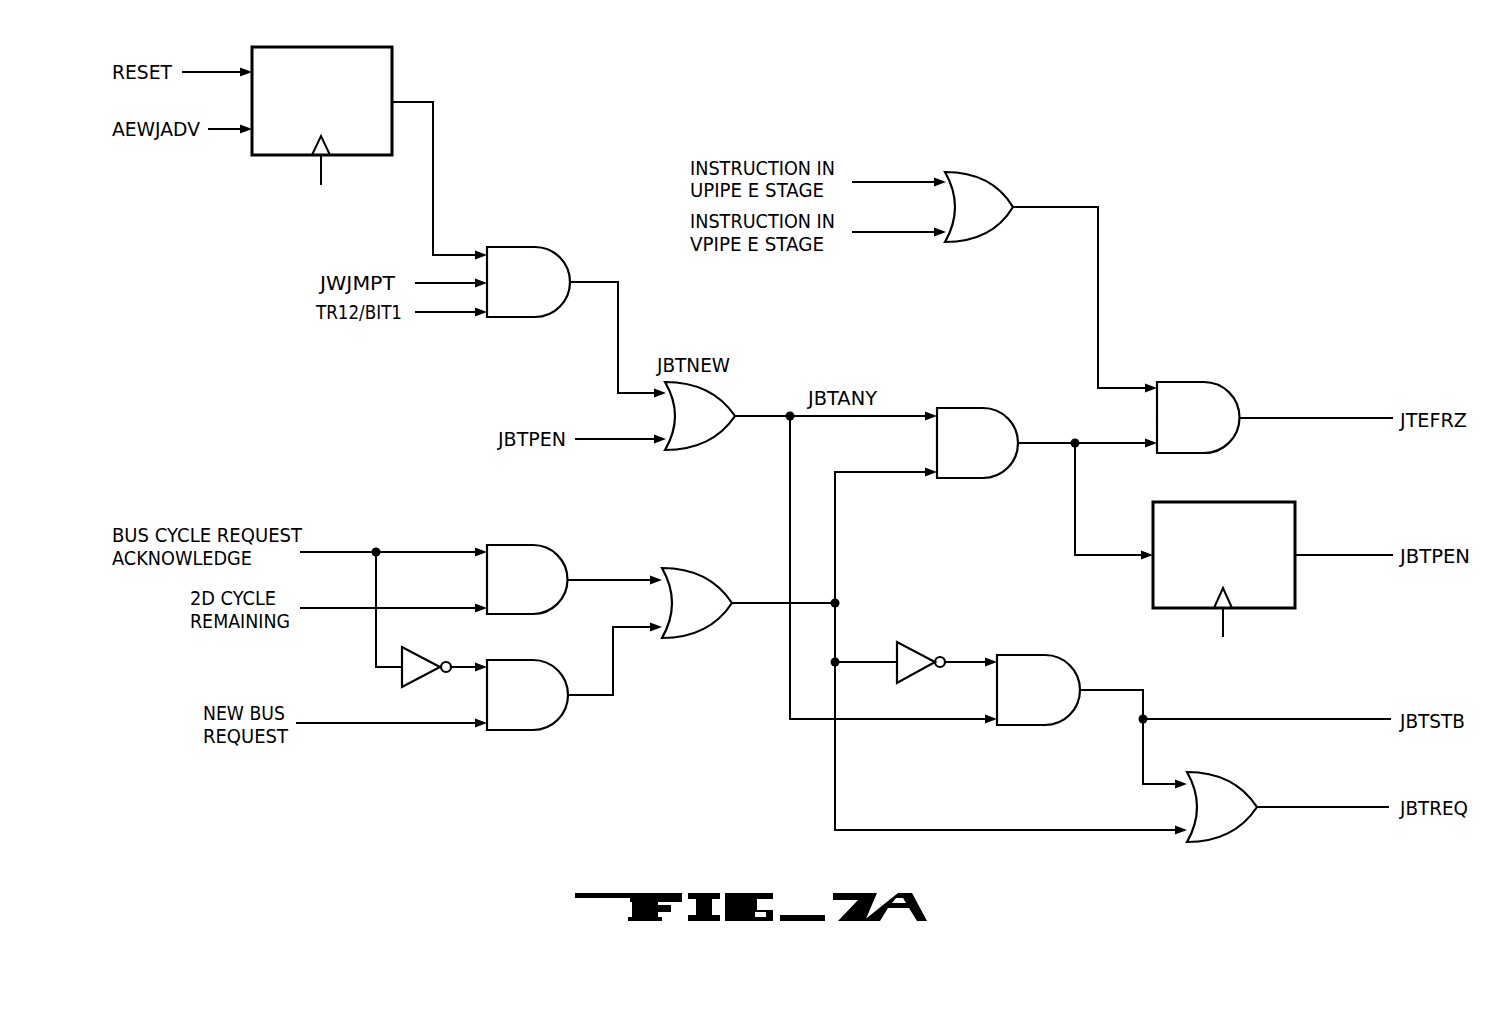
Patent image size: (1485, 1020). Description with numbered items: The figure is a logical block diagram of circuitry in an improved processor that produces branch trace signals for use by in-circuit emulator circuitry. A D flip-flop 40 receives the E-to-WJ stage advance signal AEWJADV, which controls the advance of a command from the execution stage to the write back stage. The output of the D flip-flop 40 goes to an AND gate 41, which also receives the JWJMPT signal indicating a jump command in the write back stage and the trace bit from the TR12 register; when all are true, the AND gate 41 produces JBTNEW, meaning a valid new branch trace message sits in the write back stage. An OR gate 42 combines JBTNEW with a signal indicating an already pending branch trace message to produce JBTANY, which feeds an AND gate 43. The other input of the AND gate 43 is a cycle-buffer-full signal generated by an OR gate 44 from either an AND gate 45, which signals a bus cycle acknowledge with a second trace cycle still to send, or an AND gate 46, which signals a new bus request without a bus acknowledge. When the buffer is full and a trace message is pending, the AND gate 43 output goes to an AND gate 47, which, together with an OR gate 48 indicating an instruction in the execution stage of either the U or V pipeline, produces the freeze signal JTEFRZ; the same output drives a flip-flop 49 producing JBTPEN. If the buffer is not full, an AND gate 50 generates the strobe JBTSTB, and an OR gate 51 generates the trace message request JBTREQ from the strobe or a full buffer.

The D flip-flop 40 is at (308, 122).
The AND gate 41 is at (511, 294).
The OR gate 42 is at (685, 427).
The AND gate 43 is at (960, 454).
The OR gate 44 is at (684, 614).
The AND gate 45 is at (510, 591).
The AND gate 46 is at (510, 706).
The AND gate 47 is at (1180, 427).
The OR gate 48 is at (965, 216).
The flip-flop 49 is at (1211, 574).
The AND gate 50 is at (1020, 701).
The OR gate 51 is at (1209, 817).